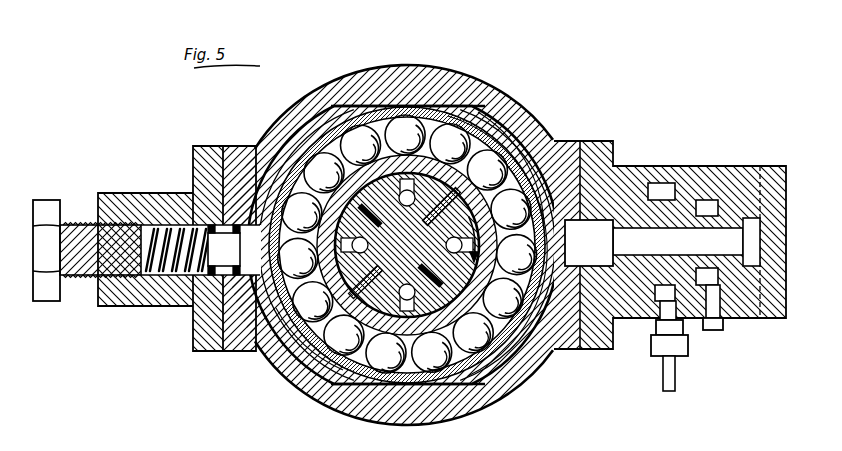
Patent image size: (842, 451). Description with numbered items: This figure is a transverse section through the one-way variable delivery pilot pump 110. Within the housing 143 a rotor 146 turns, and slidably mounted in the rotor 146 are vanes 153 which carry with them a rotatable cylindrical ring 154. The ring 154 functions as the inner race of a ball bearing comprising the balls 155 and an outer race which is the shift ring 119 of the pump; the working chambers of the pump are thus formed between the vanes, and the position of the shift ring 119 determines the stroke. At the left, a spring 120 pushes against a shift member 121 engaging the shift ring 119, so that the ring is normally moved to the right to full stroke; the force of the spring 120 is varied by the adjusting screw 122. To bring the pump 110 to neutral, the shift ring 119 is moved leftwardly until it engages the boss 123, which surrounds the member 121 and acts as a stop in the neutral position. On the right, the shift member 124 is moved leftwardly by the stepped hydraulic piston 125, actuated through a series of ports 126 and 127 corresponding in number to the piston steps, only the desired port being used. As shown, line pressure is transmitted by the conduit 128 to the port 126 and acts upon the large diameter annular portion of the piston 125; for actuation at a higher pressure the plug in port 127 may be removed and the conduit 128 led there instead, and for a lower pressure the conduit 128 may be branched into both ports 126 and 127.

The pilot pump 110 is at (373, 60).
The shift ring 119 is at (293, 148).
The spring 120 is at (158, 216).
The shift member 121 is at (242, 240).
The adjusting screw 122 is at (38, 192).
The boss 123 is at (250, 343).
The shift member 124 is at (565, 238).
The stepped hydraulic piston 125 is at (616, 188).
The port 126 is at (650, 324).
The port 127 is at (713, 315).
The conduit 128 is at (668, 370).
The housing 143 is at (536, 126).
The rotor 146 is at (500, 360).
The vanes 153 is at (500, 120).
The rotatable cylindrical ring 154 is at (348, 396).
The balls 155 is at (468, 384).